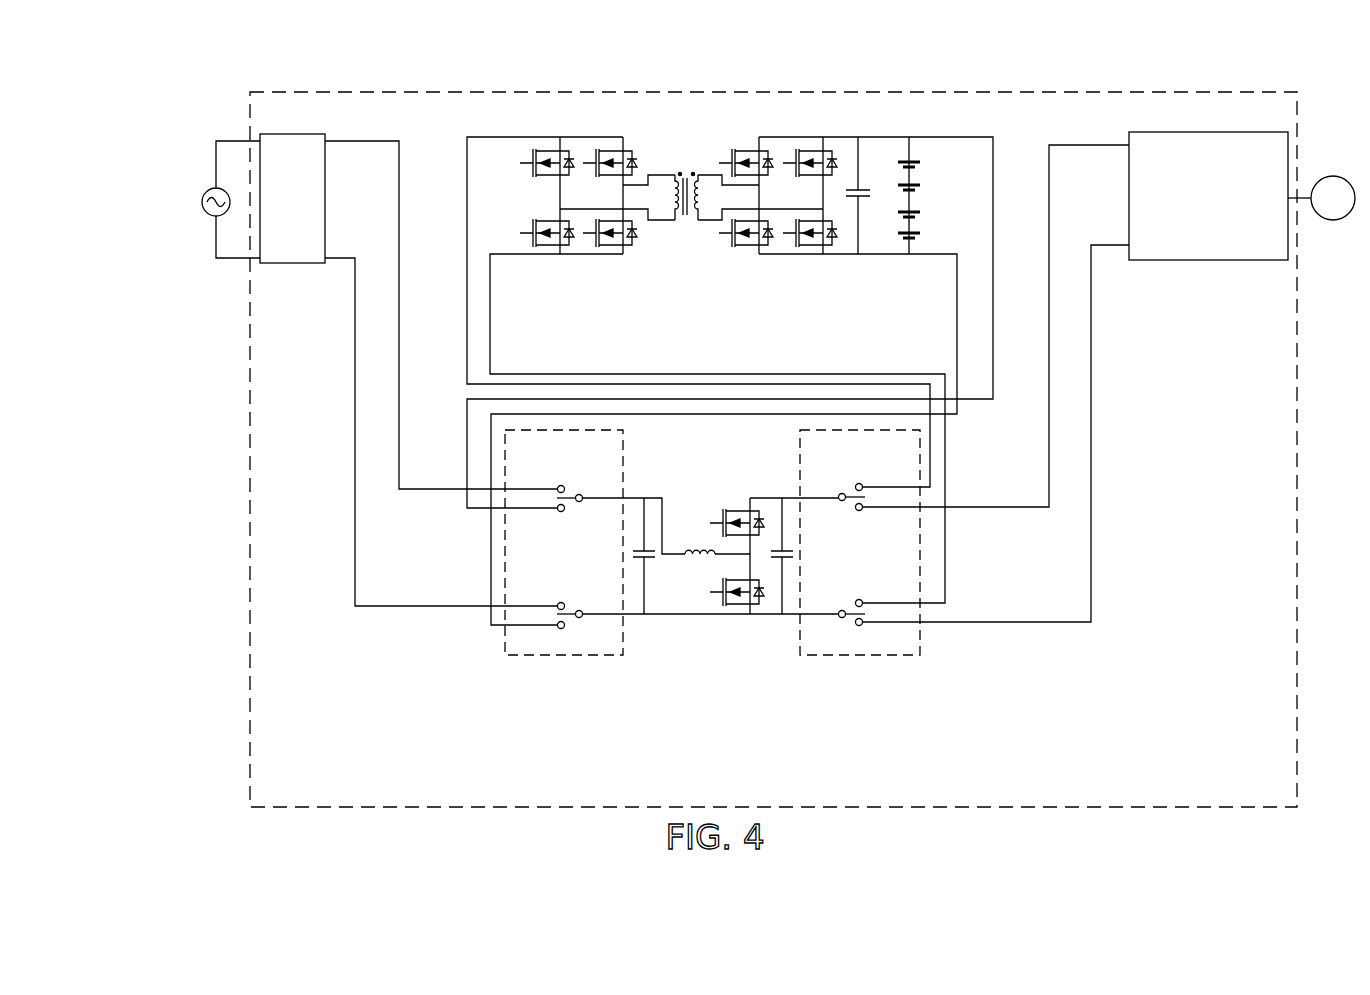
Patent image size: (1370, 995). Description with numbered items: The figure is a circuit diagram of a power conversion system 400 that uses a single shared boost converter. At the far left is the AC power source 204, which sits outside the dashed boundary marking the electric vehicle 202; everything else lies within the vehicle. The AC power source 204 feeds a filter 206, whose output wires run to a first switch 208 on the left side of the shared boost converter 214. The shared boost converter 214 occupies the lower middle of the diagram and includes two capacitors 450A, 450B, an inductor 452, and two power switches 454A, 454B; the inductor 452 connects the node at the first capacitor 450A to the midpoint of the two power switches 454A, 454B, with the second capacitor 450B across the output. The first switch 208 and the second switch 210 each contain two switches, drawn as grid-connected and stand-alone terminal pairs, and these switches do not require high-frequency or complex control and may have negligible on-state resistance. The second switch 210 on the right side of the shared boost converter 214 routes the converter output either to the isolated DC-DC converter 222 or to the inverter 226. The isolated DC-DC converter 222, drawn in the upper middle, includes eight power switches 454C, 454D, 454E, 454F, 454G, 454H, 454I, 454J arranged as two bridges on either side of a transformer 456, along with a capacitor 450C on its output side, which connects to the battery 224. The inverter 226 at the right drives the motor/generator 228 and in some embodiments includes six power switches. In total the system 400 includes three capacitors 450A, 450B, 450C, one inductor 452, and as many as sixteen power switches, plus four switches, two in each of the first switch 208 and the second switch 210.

The system 400 is at (200, 118).
The electric vehicle 202 is at (248, 640).
The AC power source 204 is at (240, 268).
The filter 206 is at (330, 268).
The first switch 208 is at (565, 668).
The second switch 210 is at (856, 668).
The shared boost converter 214 is at (803, 688).
The isolated DC-DC converter 222 is at (868, 268).
The battery 224 is at (932, 268).
The inverter 226 is at (1288, 268).
The motor/generator 228 is at (1333, 222).
The capacitor 450A is at (656, 568).
The capacitor 450B is at (774, 568).
The capacitor 450C is at (866, 186).
The inductor 452 is at (696, 538).
The power switch 454A is at (764, 494).
The power switch 454B is at (743, 622).
The power switch 454C is at (561, 124).
The power switch 454D is at (623, 127).
The power switch 454E is at (553, 259).
The power switch 454F is at (614, 259).
The power switch 454G is at (761, 127).
The power switch 454H is at (824, 128).
The power switch 454I is at (749, 259).
The power switch 454J is at (809, 259).
The transformer 456 is at (688, 169).